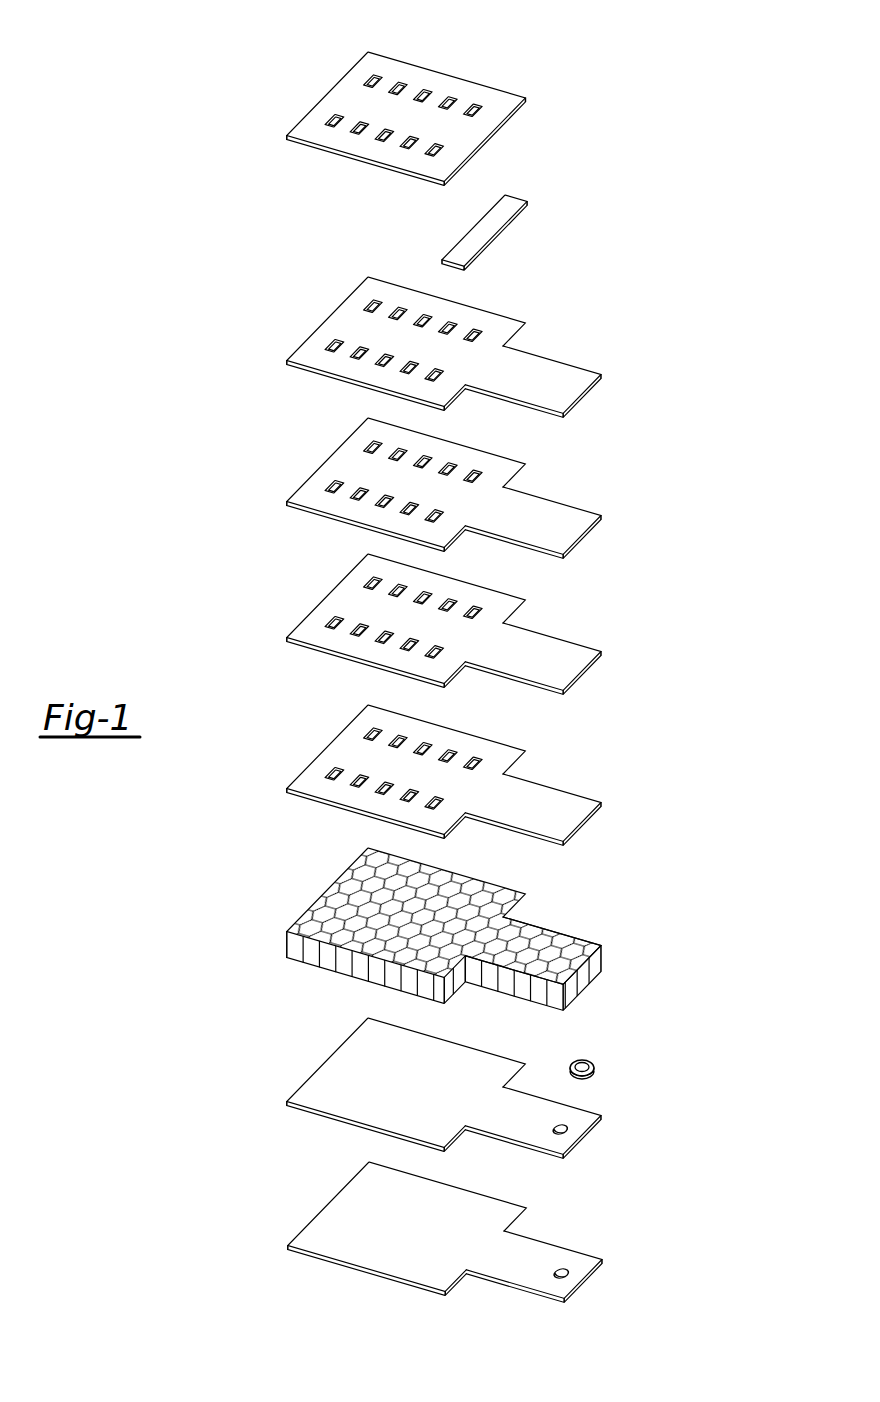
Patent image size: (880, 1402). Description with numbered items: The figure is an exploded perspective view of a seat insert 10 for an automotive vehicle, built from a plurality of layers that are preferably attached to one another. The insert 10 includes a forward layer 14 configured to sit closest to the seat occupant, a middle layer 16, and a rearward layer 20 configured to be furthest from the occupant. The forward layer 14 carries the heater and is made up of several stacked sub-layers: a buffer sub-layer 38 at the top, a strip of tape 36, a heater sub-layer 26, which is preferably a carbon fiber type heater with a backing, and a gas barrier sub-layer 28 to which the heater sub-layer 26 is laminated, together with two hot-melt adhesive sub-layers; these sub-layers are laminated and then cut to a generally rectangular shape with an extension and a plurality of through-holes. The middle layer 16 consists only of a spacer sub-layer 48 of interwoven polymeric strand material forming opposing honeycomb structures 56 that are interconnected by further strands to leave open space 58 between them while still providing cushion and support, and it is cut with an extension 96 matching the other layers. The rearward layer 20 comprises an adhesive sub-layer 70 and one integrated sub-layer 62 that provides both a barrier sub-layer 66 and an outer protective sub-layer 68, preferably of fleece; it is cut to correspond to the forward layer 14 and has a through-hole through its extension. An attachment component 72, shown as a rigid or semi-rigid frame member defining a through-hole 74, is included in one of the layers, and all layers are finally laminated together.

The insert 10 is at (722, 106).
The forward layer 14 is at (655, 63).
The middle layer 16 is at (655, 1047).
The rearward layer 20 is at (657, 1068).
The buffer sub-layer 38 is at (400, 107).
The strip of tape 36 is at (497, 225).
The heater sub-layer 26 is at (417, 347).
The gas barrier sub-layer 28 is at (415, 640).
The spacer sub-layer 48 is at (393, 940).
The honeycomb structures 56 is at (332, 927).
The open space 58 is at (343, 963).
The extension 96 is at (560, 960).
The adhesive sub-layer 70 is at (479, 1097).
The through-hole 74 is at (590, 1058).
The attachment component 72 is at (612, 1097).
The barrier sub-layer 66 is at (433, 1234).
The integrated sub-layer 62 is at (395, 1234).
The protective sub-layer 68 is at (320, 1268).